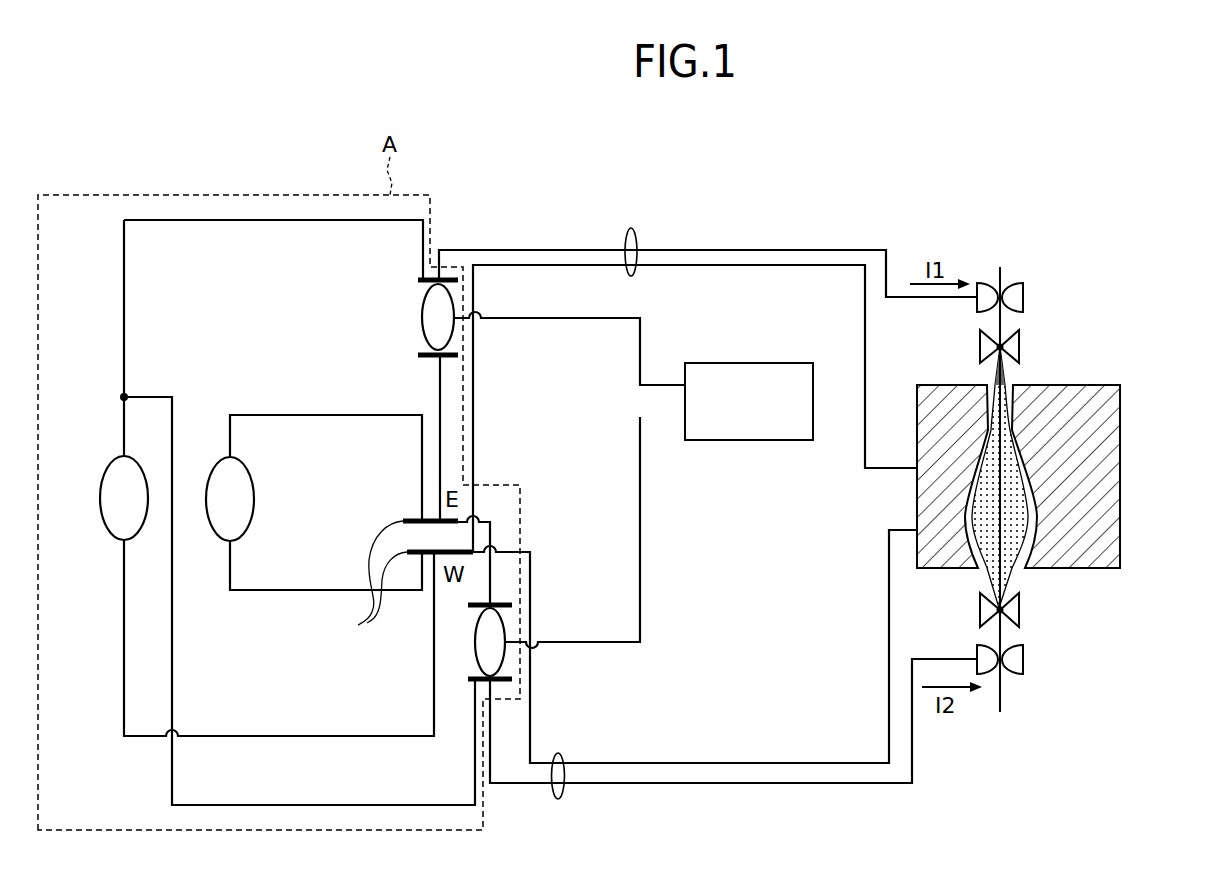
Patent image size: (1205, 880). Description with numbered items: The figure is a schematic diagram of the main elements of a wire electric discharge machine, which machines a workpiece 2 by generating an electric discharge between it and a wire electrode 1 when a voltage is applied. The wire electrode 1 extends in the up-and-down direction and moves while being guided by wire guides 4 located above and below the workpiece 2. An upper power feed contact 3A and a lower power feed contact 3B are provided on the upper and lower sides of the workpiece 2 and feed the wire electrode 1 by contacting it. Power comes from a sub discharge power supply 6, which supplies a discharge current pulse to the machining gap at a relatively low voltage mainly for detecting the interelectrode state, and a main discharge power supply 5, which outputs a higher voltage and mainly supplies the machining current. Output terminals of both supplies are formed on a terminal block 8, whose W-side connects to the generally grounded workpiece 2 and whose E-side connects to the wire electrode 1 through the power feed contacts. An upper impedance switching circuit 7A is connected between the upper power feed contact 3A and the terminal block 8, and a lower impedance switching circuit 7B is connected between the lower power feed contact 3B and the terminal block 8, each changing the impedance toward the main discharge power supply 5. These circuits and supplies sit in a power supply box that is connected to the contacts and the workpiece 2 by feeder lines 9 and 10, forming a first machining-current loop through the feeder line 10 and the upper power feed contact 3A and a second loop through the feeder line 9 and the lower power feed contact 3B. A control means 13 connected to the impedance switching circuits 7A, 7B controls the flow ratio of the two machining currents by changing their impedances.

The wire electrode 1 is at (1001, 272).
The workpiece 2 is at (1121, 480).
The upper power feed contact 3A is at (1024, 297).
The lower power feed contact 3B is at (1024, 659).
The wire guides 4 is at (1019, 347).
The main discharge power supply 5 is at (254, 498).
The sub discharge power supply 6 is at (100, 503).
The upper impedance switching circuit 7A is at (422, 318).
The lower impedance switching circuit 7B is at (504, 621).
The terminal block 8 is at (374, 580).
The feeder line 9 is at (564, 775).
The feeder line 10 is at (637, 258).
The control means 13 is at (781, 363).